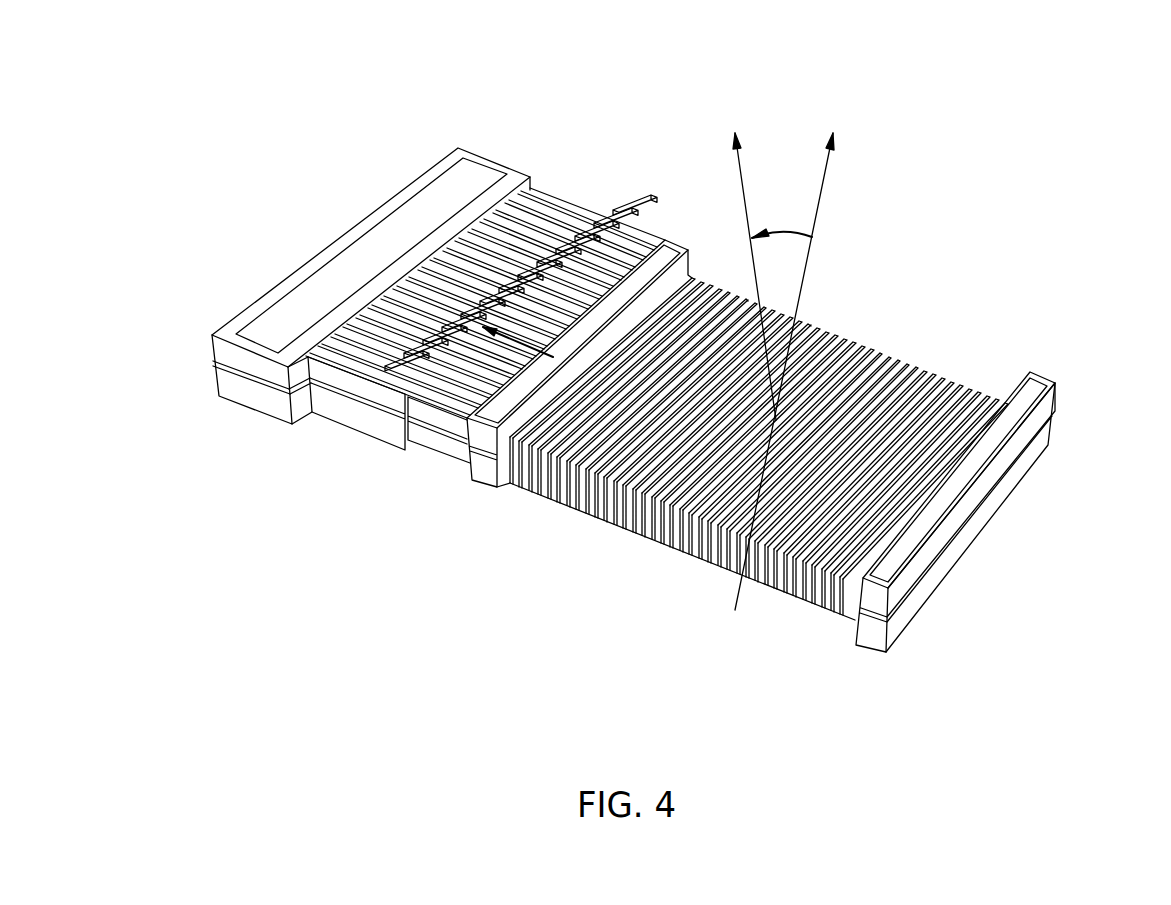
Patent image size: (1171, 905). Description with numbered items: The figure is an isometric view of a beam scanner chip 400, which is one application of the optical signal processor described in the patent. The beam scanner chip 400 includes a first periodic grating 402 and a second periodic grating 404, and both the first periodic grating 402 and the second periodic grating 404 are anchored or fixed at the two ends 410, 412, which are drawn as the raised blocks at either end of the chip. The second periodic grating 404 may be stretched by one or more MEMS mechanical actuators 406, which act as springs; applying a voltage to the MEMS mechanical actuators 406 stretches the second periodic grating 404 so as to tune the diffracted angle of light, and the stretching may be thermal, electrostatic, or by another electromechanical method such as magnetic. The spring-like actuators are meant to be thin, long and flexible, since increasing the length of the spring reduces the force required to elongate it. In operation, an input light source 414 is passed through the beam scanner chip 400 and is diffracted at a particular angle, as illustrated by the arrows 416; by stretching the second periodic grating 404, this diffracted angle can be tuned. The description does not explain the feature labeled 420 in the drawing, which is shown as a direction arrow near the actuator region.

The beam scanner chip 400 is at (1073, 142).
The first periodic grating 402 is at (958, 542).
The second periodic grating 404 is at (992, 473).
The MEMS mechanical actuators 406 is at (558, 201).
The end 410 is at (300, 268).
The end 412 is at (1040, 373).
The input light source 414 is at (735, 585).
The arrows 416 is at (820, 192).
The direction of motion 420 is at (482, 332).